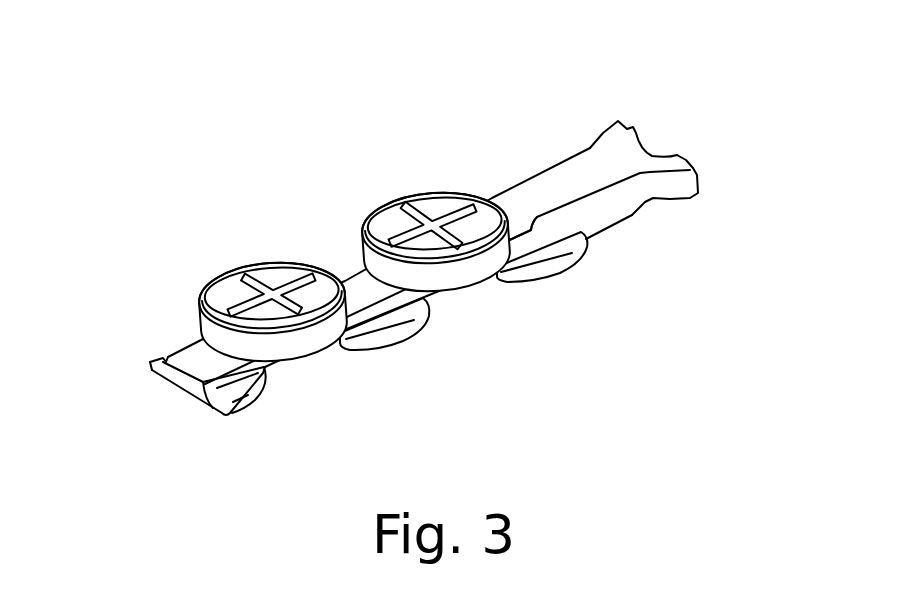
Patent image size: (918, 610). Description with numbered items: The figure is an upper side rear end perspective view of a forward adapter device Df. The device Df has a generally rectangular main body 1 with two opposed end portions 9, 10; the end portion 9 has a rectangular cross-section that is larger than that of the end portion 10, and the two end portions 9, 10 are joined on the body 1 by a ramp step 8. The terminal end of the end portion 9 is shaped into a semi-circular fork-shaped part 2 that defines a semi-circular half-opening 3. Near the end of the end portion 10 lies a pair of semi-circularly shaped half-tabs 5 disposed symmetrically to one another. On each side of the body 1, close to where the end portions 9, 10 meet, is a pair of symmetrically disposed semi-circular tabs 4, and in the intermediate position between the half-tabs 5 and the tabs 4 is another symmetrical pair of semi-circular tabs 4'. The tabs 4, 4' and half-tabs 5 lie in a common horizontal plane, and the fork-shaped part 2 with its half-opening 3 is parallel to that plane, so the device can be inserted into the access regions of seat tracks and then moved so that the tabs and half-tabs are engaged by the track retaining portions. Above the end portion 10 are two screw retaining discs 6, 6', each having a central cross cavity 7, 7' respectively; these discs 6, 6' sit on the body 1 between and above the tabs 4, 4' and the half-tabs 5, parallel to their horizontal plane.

The main body 1 is at (616, 201).
The fork-shaped part 2 is at (624, 130).
The half-opening 3 is at (668, 140).
The semi-circular tabs 4 is at (579, 277).
The semi-circular tabs 4' is at (420, 344).
The half-tabs 5 is at (243, 388).
The screw retaining disc 6 is at (426, 216).
The screw retaining disc 6' is at (241, 276).
The central cross cavity 7 is at (433, 180).
The central cross cavity 7' is at (272, 251).
The ramp step 8 is at (513, 222).
The end portion 9 is at (590, 147).
The end portion 10 is at (190, 353).
The forward adapter device Df is at (405, 127).